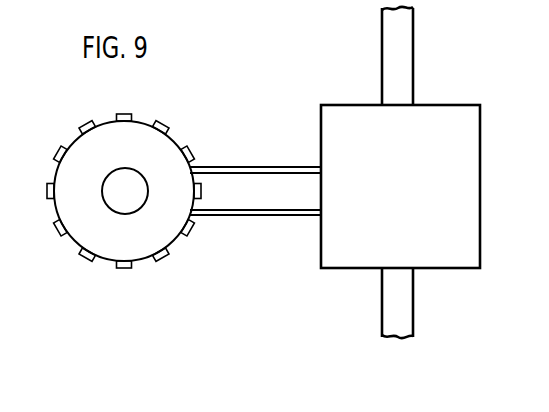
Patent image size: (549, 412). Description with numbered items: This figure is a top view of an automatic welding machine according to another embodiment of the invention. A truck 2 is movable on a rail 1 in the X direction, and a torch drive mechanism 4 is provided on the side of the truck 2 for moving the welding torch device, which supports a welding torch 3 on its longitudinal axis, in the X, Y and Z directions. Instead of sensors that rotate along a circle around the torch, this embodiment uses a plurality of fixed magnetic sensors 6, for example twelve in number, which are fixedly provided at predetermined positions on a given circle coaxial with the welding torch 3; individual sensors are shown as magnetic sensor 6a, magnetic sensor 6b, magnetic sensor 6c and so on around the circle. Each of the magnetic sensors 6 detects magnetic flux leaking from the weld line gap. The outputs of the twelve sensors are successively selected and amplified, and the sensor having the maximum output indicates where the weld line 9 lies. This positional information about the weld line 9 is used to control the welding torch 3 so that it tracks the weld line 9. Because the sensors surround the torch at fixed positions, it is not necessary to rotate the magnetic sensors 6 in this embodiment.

The rail 1 is at (405, 62).
The truck 2 is at (480, 167).
The welding torch 3 is at (147, 199).
The torch drive mechanism 4 is at (258, 195).
The magnetic sensors 6 is at (58, 101).
The magnetic sensor 6a is at (50, 183).
The magnetic sensor 6b is at (62, 153).
The magnetic sensor 6c is at (118, 92).
The weld line 9 is at (145, 122).